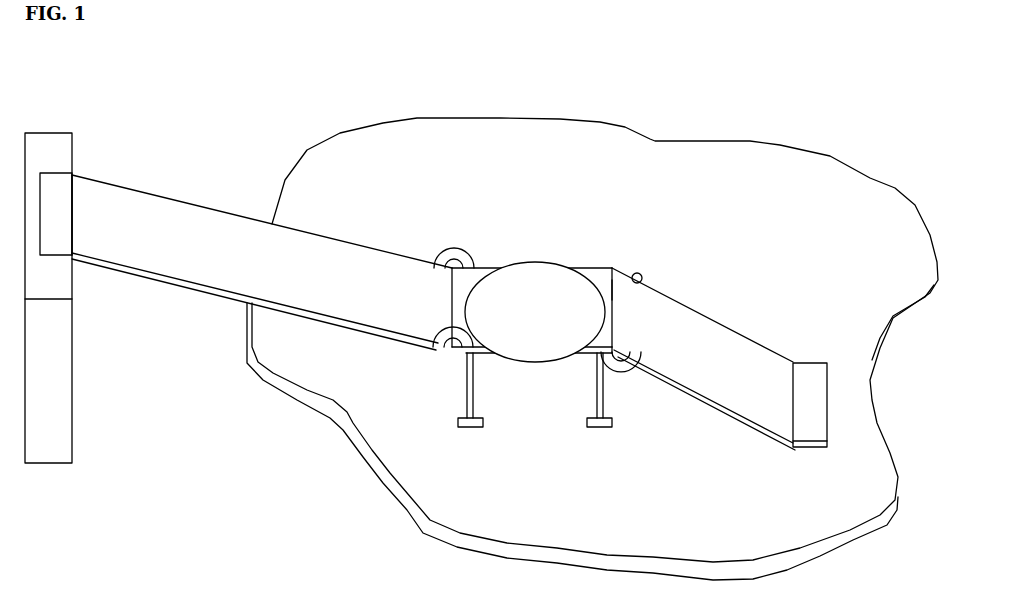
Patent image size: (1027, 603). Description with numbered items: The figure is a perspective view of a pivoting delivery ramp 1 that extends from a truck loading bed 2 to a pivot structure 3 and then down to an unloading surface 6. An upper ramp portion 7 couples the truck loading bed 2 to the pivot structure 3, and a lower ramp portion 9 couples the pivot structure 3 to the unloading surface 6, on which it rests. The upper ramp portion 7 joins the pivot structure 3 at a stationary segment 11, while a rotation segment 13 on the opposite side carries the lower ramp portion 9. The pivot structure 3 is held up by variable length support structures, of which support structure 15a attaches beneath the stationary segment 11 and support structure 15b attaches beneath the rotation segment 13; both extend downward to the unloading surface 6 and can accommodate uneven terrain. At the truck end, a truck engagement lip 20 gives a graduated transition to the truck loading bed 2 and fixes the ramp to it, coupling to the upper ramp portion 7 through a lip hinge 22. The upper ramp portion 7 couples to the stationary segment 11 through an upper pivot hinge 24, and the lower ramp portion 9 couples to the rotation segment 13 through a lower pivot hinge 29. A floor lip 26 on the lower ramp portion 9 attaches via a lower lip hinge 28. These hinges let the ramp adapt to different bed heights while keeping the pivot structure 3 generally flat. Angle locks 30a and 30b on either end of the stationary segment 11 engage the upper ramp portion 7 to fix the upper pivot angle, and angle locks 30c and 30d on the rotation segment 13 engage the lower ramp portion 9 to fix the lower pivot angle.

The pivoting delivery ramp 1 is at (662, 120).
The truck loading bed 2 is at (55, 160).
The pivot structure 3 is at (520, 282).
The unloading surface 6 is at (833, 488).
The upper ramp portion 7 is at (257, 250).
The lower ramp portion 9 is at (705, 338).
The stationary segment 11 is at (462, 282).
The rotation segment 13 is at (600, 273).
The variable length support structure 15a is at (475, 390).
The variable length support structure 15b is at (593, 400).
The truck engagement lip 20 is at (58, 192).
The lip hinge 22 is at (73, 210).
The upper pivot hinge 24 is at (447, 297).
The floor lip 26 is at (812, 403).
The lower lip hinge 28 is at (797, 380).
The lower pivot hinge 29 is at (617, 290).
The angle lock 30a is at (433, 353).
The angle lock 30b is at (450, 253).
The angle lock 30c is at (623, 373).
The angle lock 30d is at (643, 277).